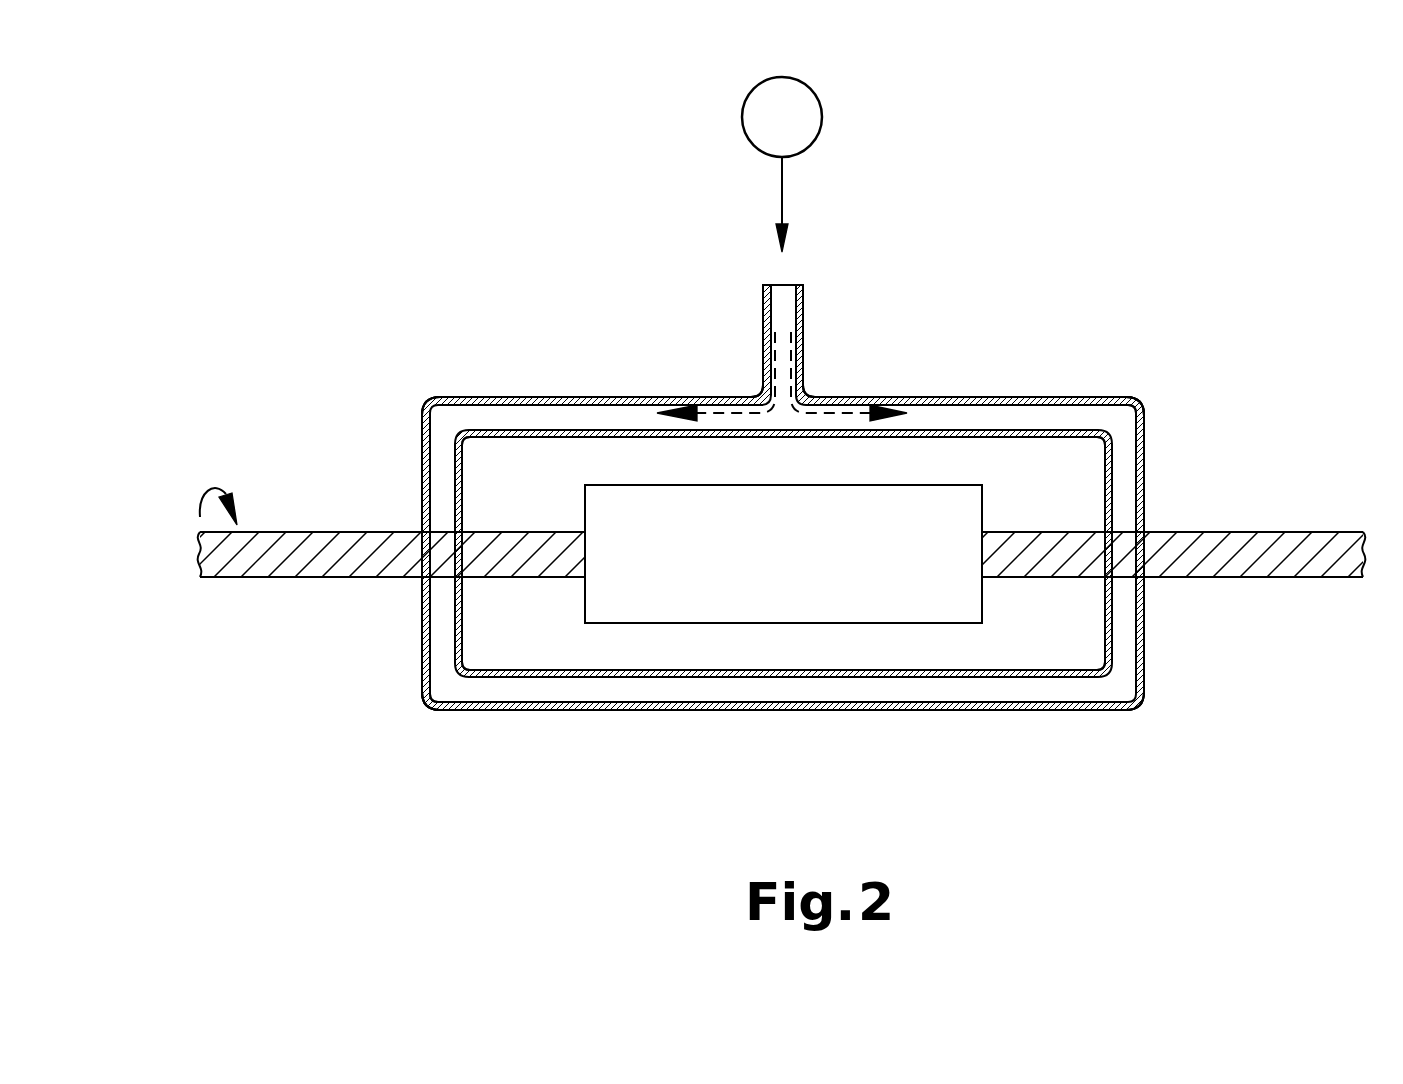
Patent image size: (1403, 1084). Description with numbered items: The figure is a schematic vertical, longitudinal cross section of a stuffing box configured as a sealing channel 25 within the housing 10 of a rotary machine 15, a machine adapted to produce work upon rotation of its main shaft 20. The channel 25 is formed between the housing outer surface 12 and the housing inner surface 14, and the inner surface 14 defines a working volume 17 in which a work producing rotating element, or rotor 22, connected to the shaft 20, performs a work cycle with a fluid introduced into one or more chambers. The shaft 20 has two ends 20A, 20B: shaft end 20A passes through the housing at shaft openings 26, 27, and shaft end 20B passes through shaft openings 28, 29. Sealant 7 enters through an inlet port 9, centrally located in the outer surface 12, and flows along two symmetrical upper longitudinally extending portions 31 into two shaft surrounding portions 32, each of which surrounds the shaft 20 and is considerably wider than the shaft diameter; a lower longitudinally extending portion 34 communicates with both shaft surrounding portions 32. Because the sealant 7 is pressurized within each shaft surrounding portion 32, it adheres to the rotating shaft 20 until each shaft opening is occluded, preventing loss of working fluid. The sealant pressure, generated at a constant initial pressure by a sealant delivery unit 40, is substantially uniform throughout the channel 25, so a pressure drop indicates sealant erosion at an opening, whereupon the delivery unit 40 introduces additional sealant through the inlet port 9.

The sealant 7 is at (728, 415).
The inlet port 9 is at (782, 303).
The housing 10 is at (1030, 710).
The housing outer surface 12 is at (420, 458).
The housing inner surface 14 is at (556, 674).
The rotary machine 15 is at (1070, 358).
The working volume 17 is at (817, 650).
The main shaft 20 is at (1205, 543).
The shaft end 20A is at (1240, 558).
The shaft end 20B is at (315, 558).
The work producing rotating element 22 is at (710, 585).
The sealing channel 25 is at (474, 702).
The shaft opening 26 is at (1142, 563).
The shaft opening 27 is at (1105, 560).
The shaft opening 28 is at (452, 552).
The shaft opening 29 is at (420, 555).
The upper longitudinally extending portion 31 is at (605, 417).
The shaft surrounding portion 32 is at (1130, 460).
The lower longitudinally extending portion 34 is at (920, 690).
The sealant delivery unit 40 is at (800, 105).